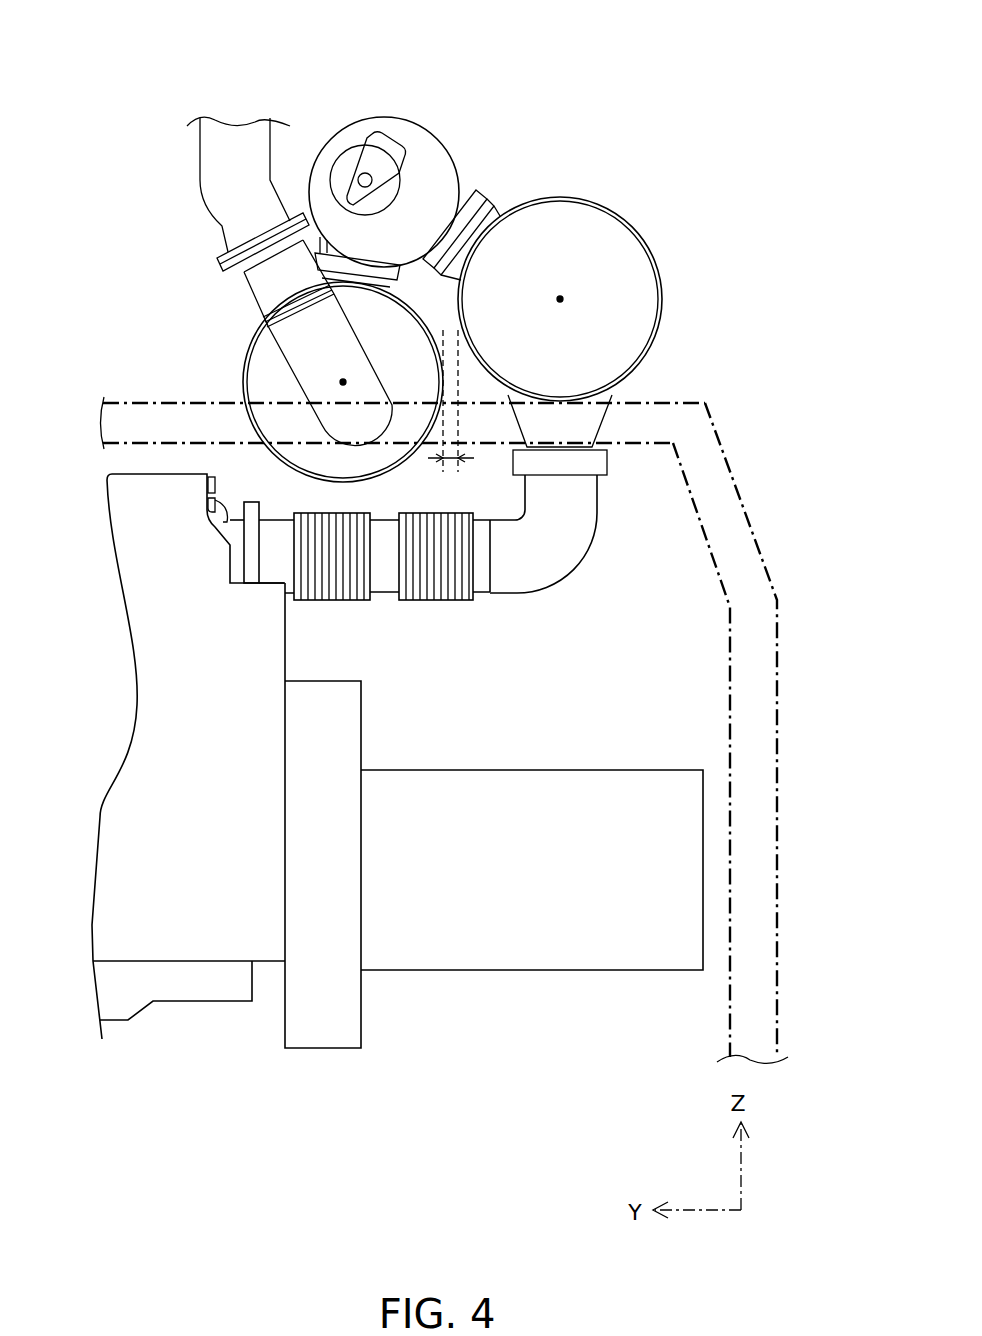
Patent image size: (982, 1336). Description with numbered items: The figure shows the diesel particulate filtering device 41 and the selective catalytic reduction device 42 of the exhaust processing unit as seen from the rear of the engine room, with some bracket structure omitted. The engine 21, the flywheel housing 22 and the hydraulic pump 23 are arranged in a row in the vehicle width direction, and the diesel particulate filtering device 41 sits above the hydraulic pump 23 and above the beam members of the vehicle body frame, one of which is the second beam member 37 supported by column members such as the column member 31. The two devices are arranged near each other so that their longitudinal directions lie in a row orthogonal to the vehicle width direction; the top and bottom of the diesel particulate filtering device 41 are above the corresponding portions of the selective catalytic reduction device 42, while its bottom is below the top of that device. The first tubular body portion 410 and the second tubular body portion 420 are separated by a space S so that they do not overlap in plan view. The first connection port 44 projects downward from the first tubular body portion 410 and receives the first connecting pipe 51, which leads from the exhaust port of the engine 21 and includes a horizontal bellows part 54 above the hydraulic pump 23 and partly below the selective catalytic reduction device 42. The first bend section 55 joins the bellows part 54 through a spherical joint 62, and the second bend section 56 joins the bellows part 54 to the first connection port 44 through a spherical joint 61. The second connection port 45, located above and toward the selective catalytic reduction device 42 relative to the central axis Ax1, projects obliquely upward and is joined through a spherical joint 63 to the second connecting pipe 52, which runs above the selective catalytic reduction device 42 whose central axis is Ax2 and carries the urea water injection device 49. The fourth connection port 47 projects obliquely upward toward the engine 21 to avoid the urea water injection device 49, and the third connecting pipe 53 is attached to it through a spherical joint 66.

The engine 21 is at (191, 939).
The flywheel housing 22 is at (325, 1022).
The hydraulic pump 23 is at (658, 958).
The column member 31 is at (778, 703).
The second beam member 37 is at (178, 403).
The diesel particulate filtering device 41 is at (623, 202).
The first tubular body portion 410 is at (545, 226).
The selective catalytic reduction device 42 is at (241, 345).
The second tubular body portion 420 is at (257, 388).
The first connection port 44 is at (572, 455).
The second connection port 45 is at (497, 212).
The fourth connection port 47 is at (265, 286).
The urea water injection device 49 is at (383, 150).
The first connecting pipe 51 is at (500, 608).
The second connecting pipe 52 is at (405, 114).
The third connecting pipe 53 is at (218, 151).
The bellows part 54 is at (418, 577).
The first bend section 55 is at (207, 503).
The second bend section 56 is at (566, 560).
The spherical joint 61 is at (607, 465).
The spherical joint 62 is at (253, 559).
The spherical joint 63 is at (478, 188).
The spherical joint 66 is at (262, 241).
The central axis of the diesel particulate filtering device Ax1 is at (560, 299).
The central axis of the selective catalytic reduction device Ax2 is at (344, 383).
The space S is at (452, 466).